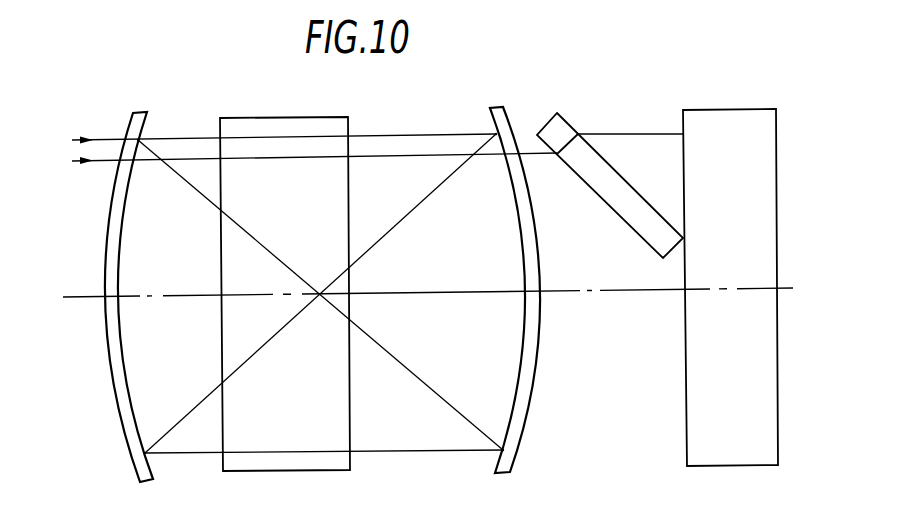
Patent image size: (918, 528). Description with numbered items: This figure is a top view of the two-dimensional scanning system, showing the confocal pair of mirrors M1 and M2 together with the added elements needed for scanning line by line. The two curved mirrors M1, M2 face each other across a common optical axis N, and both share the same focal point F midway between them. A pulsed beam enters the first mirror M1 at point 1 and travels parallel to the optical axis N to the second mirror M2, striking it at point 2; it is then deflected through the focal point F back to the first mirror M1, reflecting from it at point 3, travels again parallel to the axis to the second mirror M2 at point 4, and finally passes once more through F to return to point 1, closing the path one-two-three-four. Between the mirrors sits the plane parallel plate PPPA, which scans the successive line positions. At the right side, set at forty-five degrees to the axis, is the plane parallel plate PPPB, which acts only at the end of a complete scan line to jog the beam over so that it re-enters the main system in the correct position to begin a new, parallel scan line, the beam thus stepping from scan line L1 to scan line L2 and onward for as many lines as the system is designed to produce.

The first mirror M1 is at (131, 281).
The second mirror M2 is at (512, 275).
The plane parallel plate PPPA is at (285, 316).
The plane parallel plate PPPB is at (612, 185).
The scan line L1 is at (89, 135).
The scan line L2 is at (85, 165).
The focal point F is at (320, 293).
The optical axis N is at (428, 281).
The entry point 1 is at (514, 131).
The reflection point 2 is at (121, 128).
The reflection point 3 is at (520, 448).
The reflection point 4 is at (125, 459).